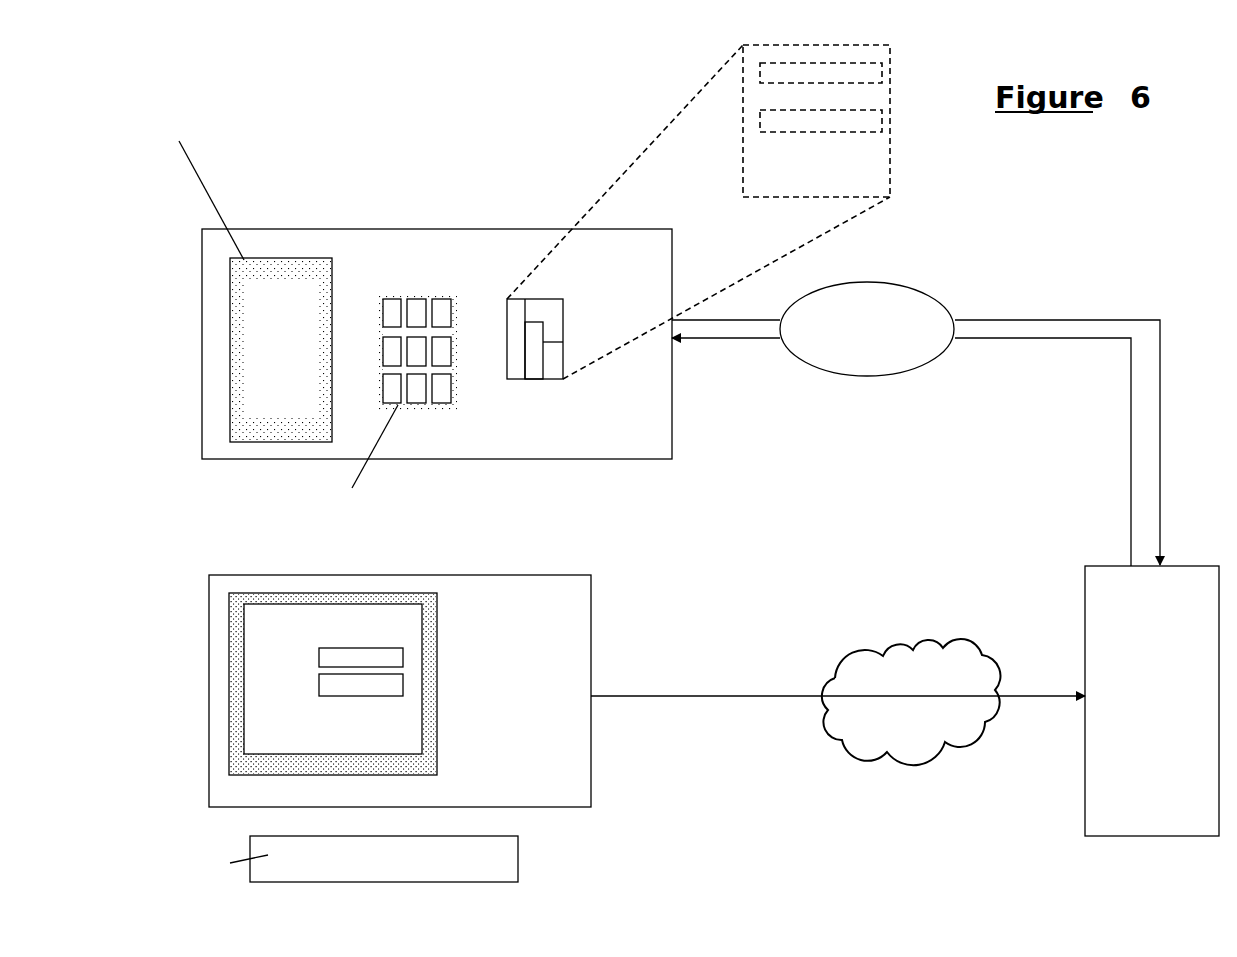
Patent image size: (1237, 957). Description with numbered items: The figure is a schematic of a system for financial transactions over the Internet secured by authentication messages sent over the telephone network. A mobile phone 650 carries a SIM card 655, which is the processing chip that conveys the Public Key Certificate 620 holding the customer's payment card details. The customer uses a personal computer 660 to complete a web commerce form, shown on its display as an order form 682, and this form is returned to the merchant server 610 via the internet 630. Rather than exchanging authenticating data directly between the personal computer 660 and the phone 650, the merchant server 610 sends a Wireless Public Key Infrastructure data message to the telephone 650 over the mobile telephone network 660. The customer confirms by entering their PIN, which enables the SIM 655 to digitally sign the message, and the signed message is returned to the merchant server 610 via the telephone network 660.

The merchant server 610 is at (1085, 750).
The Public Key Certificate 620 is at (795, 186).
The internet 630 is at (855, 723).
The mobile phone 650 is at (590, 233).
The SIM card 655 is at (507, 290).
The mobile telephone network 660 is at (863, 378).
The order form display 682 is at (267, 612).